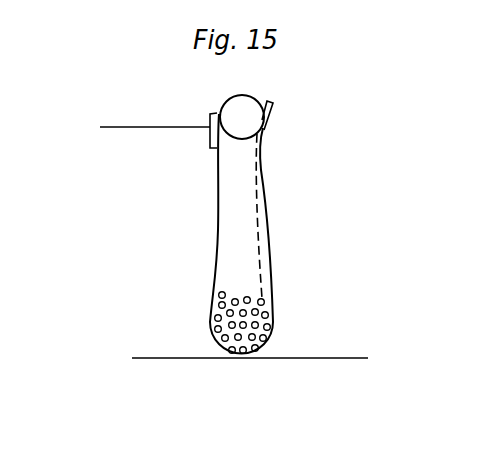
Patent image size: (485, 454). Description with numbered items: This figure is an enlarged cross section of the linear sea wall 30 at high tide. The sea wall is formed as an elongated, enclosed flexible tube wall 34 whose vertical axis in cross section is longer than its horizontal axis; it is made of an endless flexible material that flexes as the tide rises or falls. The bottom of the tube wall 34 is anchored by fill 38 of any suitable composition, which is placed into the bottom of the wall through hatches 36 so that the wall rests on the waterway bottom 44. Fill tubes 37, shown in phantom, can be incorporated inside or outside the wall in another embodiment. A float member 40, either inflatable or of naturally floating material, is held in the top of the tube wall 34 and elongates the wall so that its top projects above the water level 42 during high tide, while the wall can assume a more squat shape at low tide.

The linear sea wall 30 is at (243, 217).
The enclosed flexible tube wall 34 is at (220, 224).
The hatches 36 is at (208, 139).
The fill tubes 37 is at (260, 203).
The fill 38 is at (210, 323).
The float member 40 is at (227, 104).
The water level 42 is at (118, 128).
The waterway bottom 44 is at (265, 403).